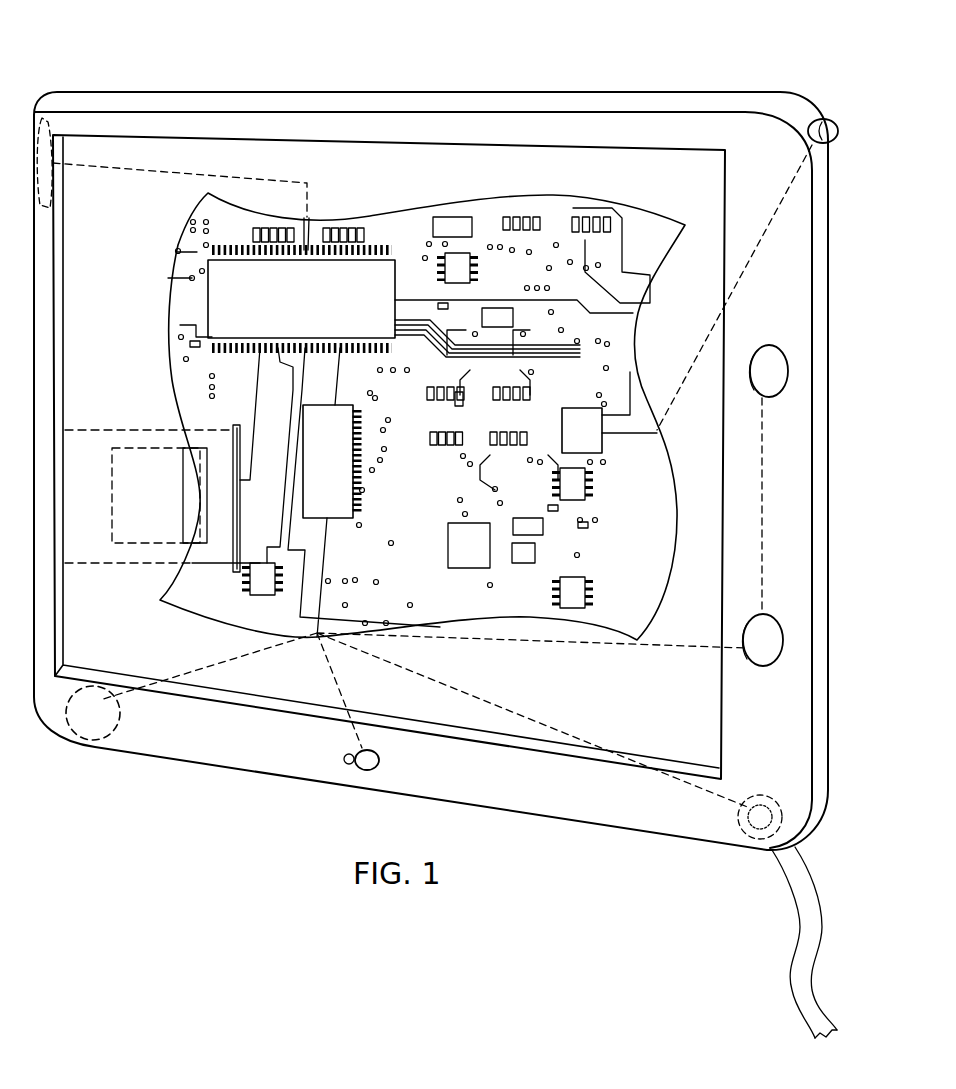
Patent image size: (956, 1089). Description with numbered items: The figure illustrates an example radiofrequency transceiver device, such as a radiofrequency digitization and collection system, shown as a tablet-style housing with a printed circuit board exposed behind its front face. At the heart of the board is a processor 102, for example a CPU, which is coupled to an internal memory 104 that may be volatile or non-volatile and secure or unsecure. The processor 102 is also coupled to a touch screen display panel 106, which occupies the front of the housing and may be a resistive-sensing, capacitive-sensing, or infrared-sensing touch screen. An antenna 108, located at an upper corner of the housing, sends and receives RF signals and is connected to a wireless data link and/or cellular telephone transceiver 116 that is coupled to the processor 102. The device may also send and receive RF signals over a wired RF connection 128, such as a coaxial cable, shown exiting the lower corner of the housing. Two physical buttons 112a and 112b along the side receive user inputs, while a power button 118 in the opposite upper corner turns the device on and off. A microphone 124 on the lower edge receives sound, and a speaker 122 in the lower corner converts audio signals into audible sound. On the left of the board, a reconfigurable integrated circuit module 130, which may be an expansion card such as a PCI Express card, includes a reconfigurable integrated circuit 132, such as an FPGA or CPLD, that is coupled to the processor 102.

The processor 102 is at (314, 303).
The internal memory 104 is at (344, 453).
The touch screen display panel 106 is at (597, 148).
The antenna 108 is at (820, 125).
The physical button 112a is at (751, 370).
The physical button 112b is at (745, 648).
The wireless data link and/or cellular telephone transceiver 116 is at (588, 443).
The power button 118 is at (47, 122).
The speaker 122 is at (100, 736).
The microphone 124 is at (370, 773).
The wired RF connection 128 is at (793, 890).
The reconfigurable integrated circuit (RIC) module 130 is at (104, 458).
The reconfigurable integrated circuit (RIC) 132 is at (174, 491).